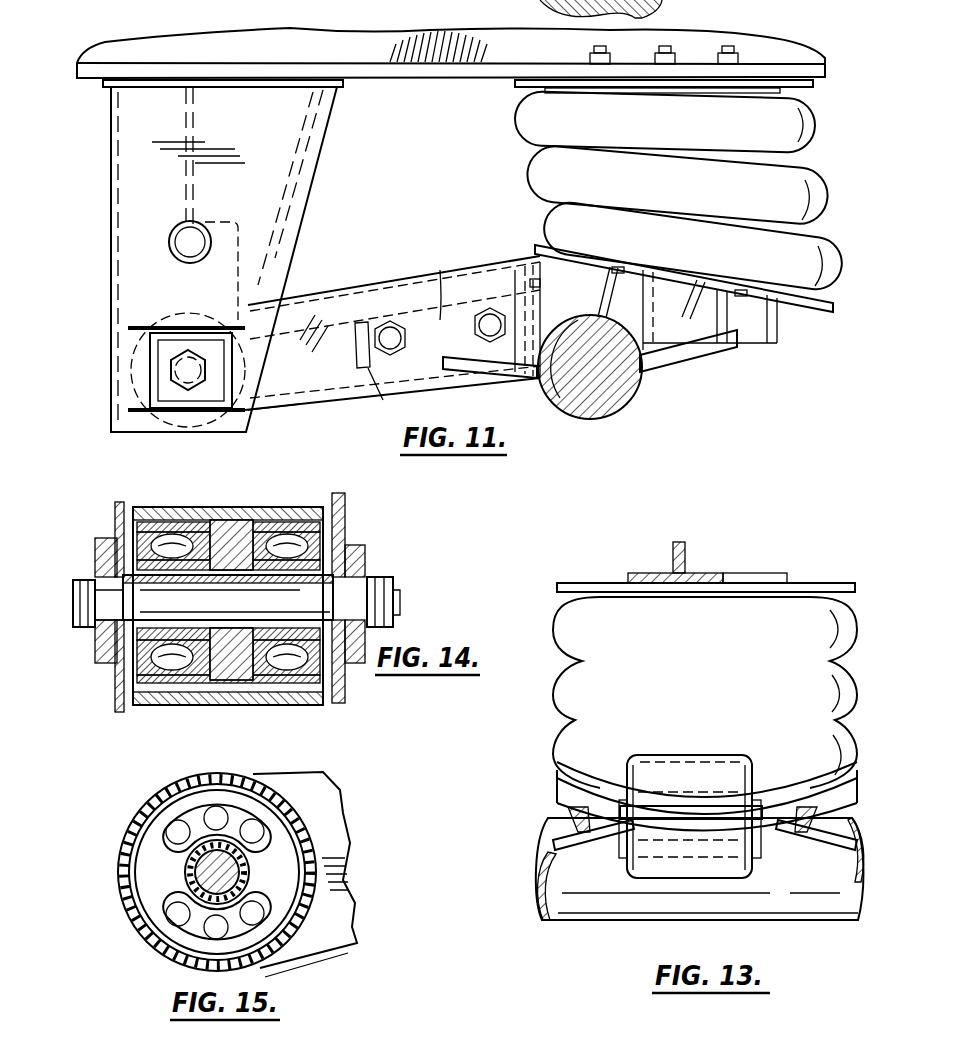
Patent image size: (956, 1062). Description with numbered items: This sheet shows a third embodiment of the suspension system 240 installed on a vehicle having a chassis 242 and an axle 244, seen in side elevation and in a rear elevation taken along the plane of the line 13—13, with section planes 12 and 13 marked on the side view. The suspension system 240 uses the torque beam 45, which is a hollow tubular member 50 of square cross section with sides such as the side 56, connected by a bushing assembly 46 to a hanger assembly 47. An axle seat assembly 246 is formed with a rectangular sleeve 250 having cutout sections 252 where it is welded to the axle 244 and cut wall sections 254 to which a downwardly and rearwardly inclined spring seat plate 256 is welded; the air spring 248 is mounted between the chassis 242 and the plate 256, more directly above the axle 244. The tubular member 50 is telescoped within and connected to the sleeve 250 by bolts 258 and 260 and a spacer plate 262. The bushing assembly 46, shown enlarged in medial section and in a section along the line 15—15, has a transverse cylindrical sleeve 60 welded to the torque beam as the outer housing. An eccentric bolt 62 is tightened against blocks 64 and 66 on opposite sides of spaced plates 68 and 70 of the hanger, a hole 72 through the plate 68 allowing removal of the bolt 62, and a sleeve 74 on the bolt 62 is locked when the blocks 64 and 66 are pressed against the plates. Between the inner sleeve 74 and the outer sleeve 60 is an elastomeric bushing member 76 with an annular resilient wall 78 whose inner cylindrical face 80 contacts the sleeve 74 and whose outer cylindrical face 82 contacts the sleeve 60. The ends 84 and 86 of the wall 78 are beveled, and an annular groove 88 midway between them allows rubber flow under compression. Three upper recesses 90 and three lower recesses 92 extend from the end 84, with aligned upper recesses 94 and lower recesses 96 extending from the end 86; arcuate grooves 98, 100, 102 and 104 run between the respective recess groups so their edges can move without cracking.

In FIG. 11, the chassis 242 is at (288, 36).
In FIG. 13, the chassis 242 is at (708, 573).
In FIG. 11, the axle 244 is at (628, 434).
In FIG. 13, the axle 244 is at (775, 905).
In FIG. 11, the line 13— 13 is at (835, 62).
In FIG. 11, the line 12— 12 is at (65, 78).
In FIG. 11, the hanger assembly 47 is at (108, 292).
In FIG. 11, the bushing assembly 46 is at (168, 358).
In FIG. 14, the bushing assembly 46 is at (288, 504).
In FIG. 15, the bushing assembly 46 is at (152, 885).
In FIG. 11, the eccentric bolt 62 is at (180, 370).
In FIG. 14, the eccentric bolt 62 is at (80, 596).
In FIG. 15, the eccentric bolt 62 is at (190, 878).
In FIG. 11, the torque beam 45 is at (330, 290).
In FIG. 11, the hollow tubular member 50 is at (292, 304).
In FIG. 11, the rectangular sleeve 250 is at (445, 270).
In FIG. 11, the bolt 258 is at (366, 370).
In FIG. 11, the bolt 260 is at (490, 342).
In FIG. 11, the spacer plate 262 is at (372, 398).
In FIG. 11, the side 56 is at (295, 410).
In FIG. 15, the side 56 is at (335, 798).
In FIG. 11, the cutout sections 252 is at (560, 400).
In FIG. 11, the axle seat assembly 246 is at (682, 360).
In FIG. 13, the axle seat assembly 246 is at (662, 882).
In FIG. 11, the cut wall sections 254 is at (712, 330).
In FIG. 11, the air spring 248 is at (825, 235).
In FIG. 13, the air spring 248 is at (548, 718).
In FIG. 11, the spring seat plate 256 is at (842, 304).
In FIG. 13, the spring seat plate 256 is at (560, 790).
In FIG. 11, the suspension system 240 is at (518, 428).
In FIG. 14, the transverse cylindrical sleeve 60 is at (258, 507).
In FIG. 15, the transverse cylindrical sleeve 60 is at (132, 930).
In FIG. 14, the annular groove 88 is at (228, 520).
In FIG. 14, the upper recesses 90 is at (160, 550).
In FIG. 15, the upper recesses 90 is at (172, 824).
In FIG. 14, the arcuate groove 98 is at (150, 548).
In FIG. 15, the arcuate groove 98 is at (205, 812).
In FIG. 14, the upper recesses 94 is at (298, 550).
In FIG. 14, the arcuate groove 102 is at (302, 540).
In FIG. 14, the arcuate groove 100 is at (163, 660).
In FIG. 15, the arcuate groove 100 is at (225, 940).
In FIG. 14, the lower recesses 96 is at (292, 662).
In FIG. 14, the lower recesses 92 is at (140, 688).
In FIG. 15, the lower recesses 92 is at (176, 928).
In FIG. 14, the inner cylindrical face 80 is at (304, 618).
In FIG. 14, the block 64 is at (100, 555).
In FIG. 14, the hole 72 is at (112, 632).
In FIG. 14, the end 84 is at (116, 530).
In FIG. 15, the end 84 is at (295, 857).
In FIG. 14, the plate 68 is at (120, 503).
In FIG. 14, the elastomeric bushing member 76 is at (128, 708).
In FIG. 15, the elastomeric bushing member 76 is at (277, 897).
In FIG. 14, the end 86 is at (342, 527).
In FIG. 14, the plate 70 is at (340, 494).
In FIG. 14, the block 66 is at (365, 562).
In FIG. 14, the sleeve 74 is at (387, 624).
In FIG. 15, the sleeve 74 is at (192, 864).
In FIG. 14, the arcuate groove 104 is at (335, 700).
In FIG. 14, the outer cylindrical face 82 is at (312, 705).
In FIG. 14, the annular resilient wall 78 is at (262, 694).
In FIG. 14, the line 15— 15 is at (128, 498).